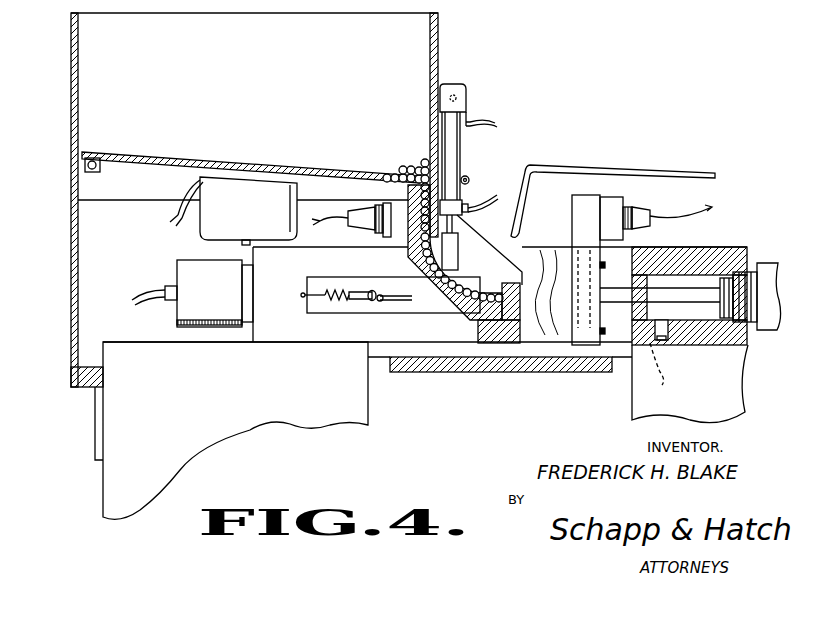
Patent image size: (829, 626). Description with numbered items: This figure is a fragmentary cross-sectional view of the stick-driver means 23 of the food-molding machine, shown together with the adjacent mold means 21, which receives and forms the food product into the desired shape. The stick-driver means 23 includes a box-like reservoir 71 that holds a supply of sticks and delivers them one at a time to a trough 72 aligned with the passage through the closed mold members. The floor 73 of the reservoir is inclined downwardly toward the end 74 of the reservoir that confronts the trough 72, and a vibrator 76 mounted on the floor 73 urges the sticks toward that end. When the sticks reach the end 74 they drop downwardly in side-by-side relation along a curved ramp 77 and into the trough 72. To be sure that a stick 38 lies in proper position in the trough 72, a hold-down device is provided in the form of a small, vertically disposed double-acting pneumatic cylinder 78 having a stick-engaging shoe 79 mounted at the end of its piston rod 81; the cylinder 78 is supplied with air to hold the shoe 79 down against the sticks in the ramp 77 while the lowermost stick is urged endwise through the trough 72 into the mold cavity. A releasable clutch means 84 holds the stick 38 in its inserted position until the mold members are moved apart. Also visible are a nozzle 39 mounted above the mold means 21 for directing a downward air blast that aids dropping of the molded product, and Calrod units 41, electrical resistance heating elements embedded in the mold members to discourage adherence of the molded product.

The box-like reservoir 71 is at (71, 77).
The floor 73 is at (178, 160).
The end 74 is at (440, 58).
The stick-driver means 23 is at (483, 86).
The double-acting pneumatic cylinder 78 is at (458, 150).
The nozzle 39 is at (520, 191).
The mold means 21 is at (544, 238).
The vibrator 76 is at (262, 218).
The piston rod 81 is at (457, 228).
The curved ramp 77 is at (412, 263).
The stick-engaging shoe 79 is at (456, 250).
The releasable clutch means 84 is at (412, 310).
The stick 38 is at (498, 310).
The trough 72 is at (505, 310).
The Calrod units 41 is at (590, 330).